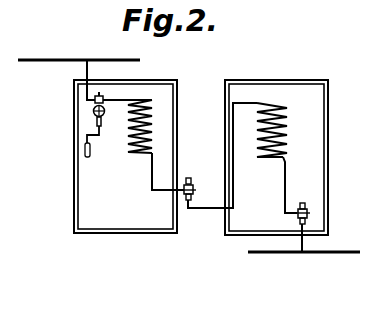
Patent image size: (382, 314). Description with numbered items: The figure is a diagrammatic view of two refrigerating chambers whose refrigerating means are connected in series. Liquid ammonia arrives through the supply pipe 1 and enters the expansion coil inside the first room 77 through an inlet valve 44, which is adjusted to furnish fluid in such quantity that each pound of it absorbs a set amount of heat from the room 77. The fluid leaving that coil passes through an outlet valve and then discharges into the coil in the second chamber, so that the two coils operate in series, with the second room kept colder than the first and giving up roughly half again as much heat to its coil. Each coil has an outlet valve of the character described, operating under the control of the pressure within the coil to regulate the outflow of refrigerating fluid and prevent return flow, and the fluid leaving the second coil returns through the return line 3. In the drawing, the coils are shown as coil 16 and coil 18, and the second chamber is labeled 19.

The supply pipe 1 is at (79, 49).
The return bus bar / main line 3 is at (290, 254).
The heating coil in first chamber 16 is at (152, 120).
The heating coil in second chamber 18 is at (279, 132).
The second chamber casing 19 is at (312, 160).
The inlet valve 44 is at (94, 100).
The room 77 is at (90, 191).